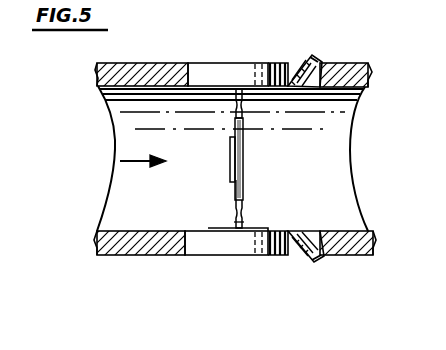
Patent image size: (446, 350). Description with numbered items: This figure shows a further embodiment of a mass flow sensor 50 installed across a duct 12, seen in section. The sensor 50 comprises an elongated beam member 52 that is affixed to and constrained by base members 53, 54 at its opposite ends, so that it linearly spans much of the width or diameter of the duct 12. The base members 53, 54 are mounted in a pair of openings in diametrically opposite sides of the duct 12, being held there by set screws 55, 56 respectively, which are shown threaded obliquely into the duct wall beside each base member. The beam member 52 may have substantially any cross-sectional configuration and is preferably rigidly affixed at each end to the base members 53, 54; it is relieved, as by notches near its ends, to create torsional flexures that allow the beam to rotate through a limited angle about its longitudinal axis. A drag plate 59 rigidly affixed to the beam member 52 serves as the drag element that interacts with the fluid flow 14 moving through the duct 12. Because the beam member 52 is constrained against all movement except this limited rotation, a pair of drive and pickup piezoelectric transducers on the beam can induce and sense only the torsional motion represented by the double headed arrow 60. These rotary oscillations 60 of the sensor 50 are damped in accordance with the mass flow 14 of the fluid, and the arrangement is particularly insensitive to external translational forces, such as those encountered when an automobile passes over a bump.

The duct 12 is at (142, 63).
The fluid flow 14 is at (140, 162).
The sensor 50 is at (252, 165).
The beam member 52 is at (243, 176).
The base member 53 is at (236, 73).
The base member 54 is at (239, 257).
The set screw 55 is at (312, 60).
The set screw 56 is at (318, 263).
The drag plate 59 is at (230, 150).
The double headed arrow 60 is at (218, 202).